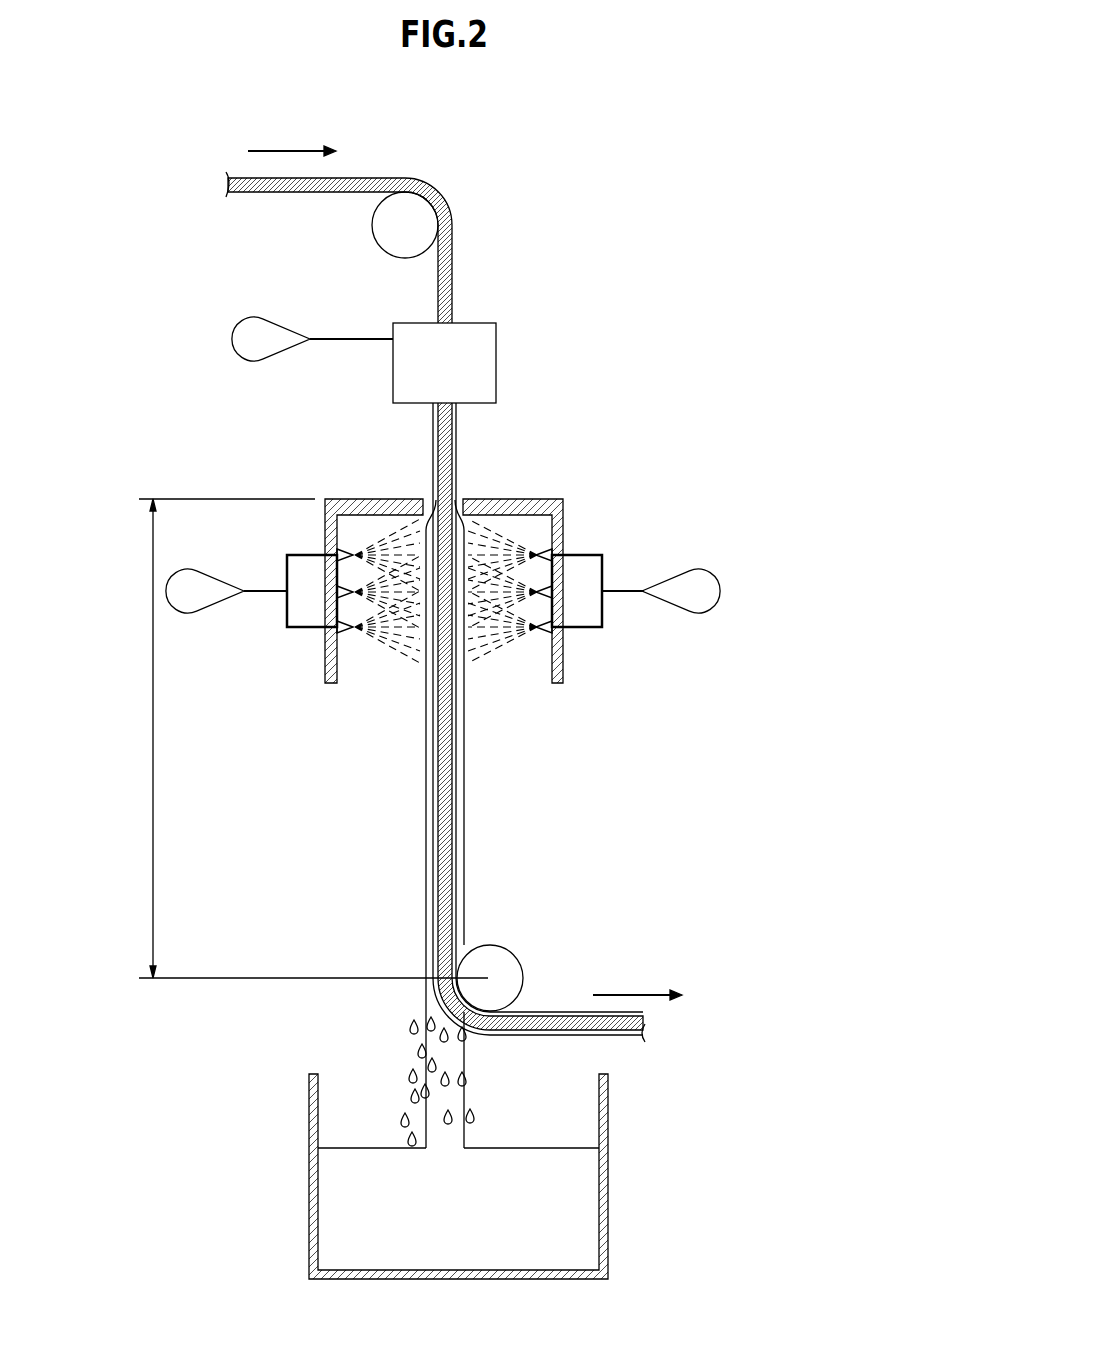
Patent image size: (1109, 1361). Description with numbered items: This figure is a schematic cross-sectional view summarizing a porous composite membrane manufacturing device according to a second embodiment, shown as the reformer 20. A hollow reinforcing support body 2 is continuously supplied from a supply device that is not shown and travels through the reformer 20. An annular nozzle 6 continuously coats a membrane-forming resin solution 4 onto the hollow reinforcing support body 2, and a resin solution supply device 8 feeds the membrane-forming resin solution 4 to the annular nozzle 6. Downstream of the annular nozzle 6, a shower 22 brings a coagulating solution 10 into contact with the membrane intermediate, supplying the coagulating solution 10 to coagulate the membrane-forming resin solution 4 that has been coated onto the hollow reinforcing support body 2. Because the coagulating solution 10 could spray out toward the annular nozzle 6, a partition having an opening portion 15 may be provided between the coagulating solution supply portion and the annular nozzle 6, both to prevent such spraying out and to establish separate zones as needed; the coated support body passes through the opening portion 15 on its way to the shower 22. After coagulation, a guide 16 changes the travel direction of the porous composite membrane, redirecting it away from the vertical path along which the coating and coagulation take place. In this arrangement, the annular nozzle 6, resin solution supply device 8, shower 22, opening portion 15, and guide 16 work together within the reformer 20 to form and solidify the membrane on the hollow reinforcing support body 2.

The hollow reinforcing support body 2 is at (383, 178).
The membrane-forming resin solution 4 is at (456, 428).
The annular nozzle 6 is at (473, 323).
The resin solution supply device 8 is at (246, 338).
The coagulating solution 10 is at (472, 653).
The opening portion 15 is at (457, 503).
The guide 16 is at (512, 953).
The reformer 20 is at (705, 265).
The shower 22 is at (543, 550).